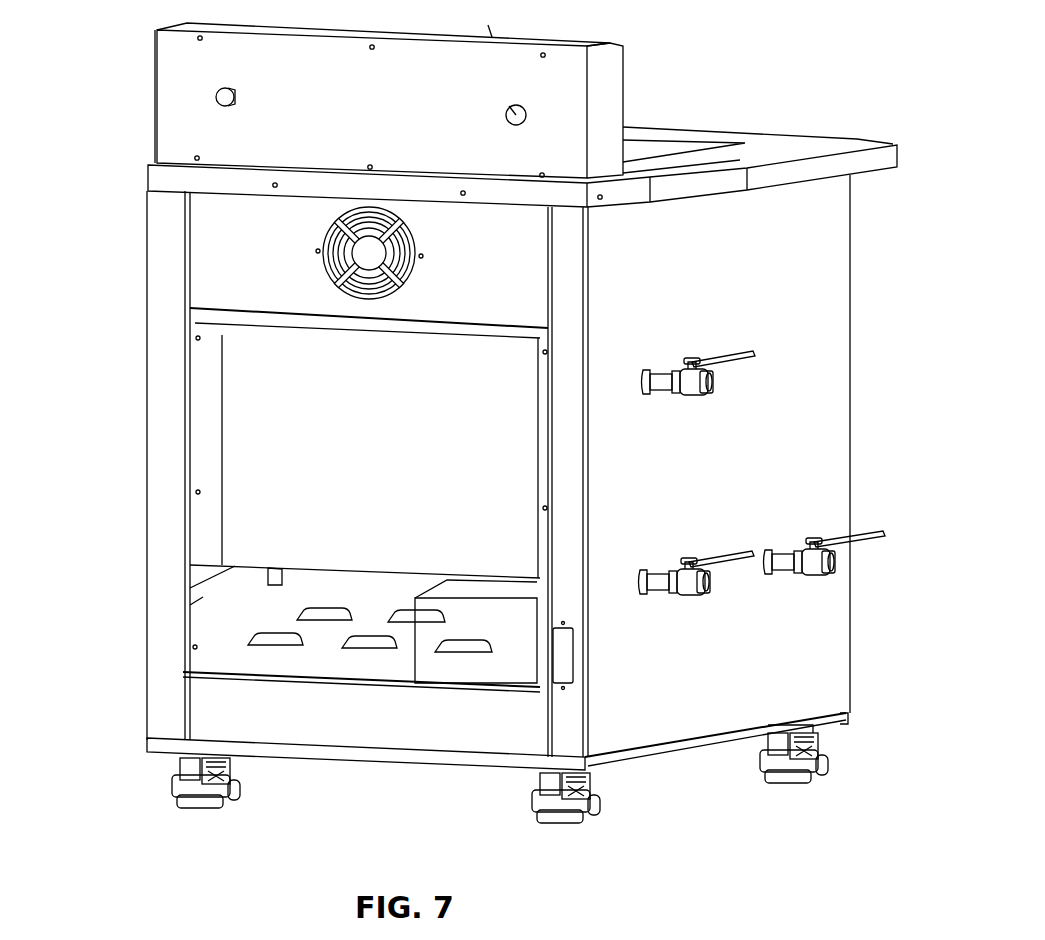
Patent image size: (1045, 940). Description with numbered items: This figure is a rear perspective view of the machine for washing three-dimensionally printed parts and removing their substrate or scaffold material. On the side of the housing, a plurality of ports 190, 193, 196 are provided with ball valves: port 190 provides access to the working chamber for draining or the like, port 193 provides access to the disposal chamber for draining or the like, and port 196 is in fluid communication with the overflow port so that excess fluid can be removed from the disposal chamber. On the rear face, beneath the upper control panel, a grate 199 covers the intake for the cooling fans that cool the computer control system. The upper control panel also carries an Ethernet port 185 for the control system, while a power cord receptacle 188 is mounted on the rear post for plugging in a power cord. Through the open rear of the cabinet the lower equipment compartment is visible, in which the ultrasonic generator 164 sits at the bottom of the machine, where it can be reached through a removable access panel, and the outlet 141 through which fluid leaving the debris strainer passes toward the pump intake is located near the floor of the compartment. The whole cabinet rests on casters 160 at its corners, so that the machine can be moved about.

The outlet 141 is at (272, 586).
The caster 160 is at (238, 790).
The ultrasonic generator 164 is at (437, 607).
The Ethernet port 185 is at (215, 96).
The power cord receptacle 188 is at (565, 658).
The port 190 is at (800, 567).
The port 193 is at (678, 592).
The port 196 is at (687, 388).
The grate 199 is at (325, 242).